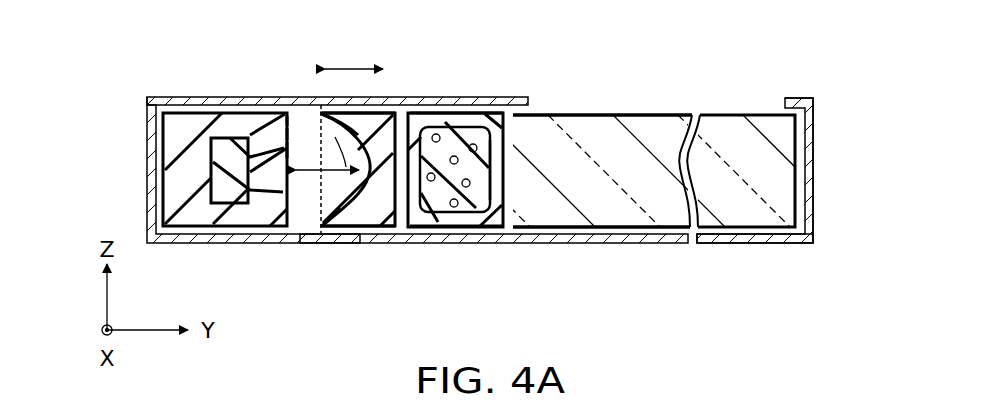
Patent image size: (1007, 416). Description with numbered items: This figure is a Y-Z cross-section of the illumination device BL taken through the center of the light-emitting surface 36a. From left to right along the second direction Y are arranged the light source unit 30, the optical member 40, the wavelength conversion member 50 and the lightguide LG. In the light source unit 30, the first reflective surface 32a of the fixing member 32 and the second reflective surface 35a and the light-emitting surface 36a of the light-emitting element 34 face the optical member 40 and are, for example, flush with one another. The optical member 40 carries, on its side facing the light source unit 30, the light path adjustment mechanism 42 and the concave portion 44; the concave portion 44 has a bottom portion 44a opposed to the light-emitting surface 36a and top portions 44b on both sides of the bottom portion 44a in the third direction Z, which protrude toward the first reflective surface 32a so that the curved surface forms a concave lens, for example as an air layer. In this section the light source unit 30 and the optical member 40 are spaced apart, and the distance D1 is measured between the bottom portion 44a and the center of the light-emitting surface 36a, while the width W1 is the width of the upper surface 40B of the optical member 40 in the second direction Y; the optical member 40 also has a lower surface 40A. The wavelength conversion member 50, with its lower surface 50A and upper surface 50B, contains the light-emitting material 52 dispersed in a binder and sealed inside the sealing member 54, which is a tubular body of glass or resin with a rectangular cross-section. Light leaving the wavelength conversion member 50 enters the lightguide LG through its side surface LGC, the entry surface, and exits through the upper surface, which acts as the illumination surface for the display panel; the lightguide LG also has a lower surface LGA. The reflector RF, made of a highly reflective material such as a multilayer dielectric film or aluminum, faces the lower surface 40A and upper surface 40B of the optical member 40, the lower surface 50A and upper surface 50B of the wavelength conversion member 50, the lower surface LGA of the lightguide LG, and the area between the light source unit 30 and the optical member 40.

The light source unit 30 is at (153, 133).
The fixing member 32 is at (175, 102).
The light-emitting element 34 is at (210, 103).
The first reflective surface 32a is at (290, 150).
The second reflective surface 35a is at (291, 134).
The light-emitting surface 36a is at (291, 121).
The distance D1 is at (322, 106).
The width W1 is at (354, 55).
The optical member 40 is at (378, 229).
The lower surface 40A is at (358, 237).
The upper surface 40B is at (380, 110).
The light path adjustment mechanism 42 is at (328, 237).
The concave portion 44 is at (335, 188).
The bottom portion 44a is at (399, 124).
The top portions 44b is at (308, 227).
The wavelength conversion member 50 is at (497, 228).
The lower surface 50A is at (453, 235).
The upper surface 50B is at (494, 106).
The light-emitting material 52 is at (471, 143).
The sealing member 54 is at (479, 214).
The lightguide LG is at (569, 230).
The lower surface LGA is at (623, 230).
The side surface LGC is at (504, 148).
The reflector RF is at (738, 244).
The illumination device BL is at (781, 81).